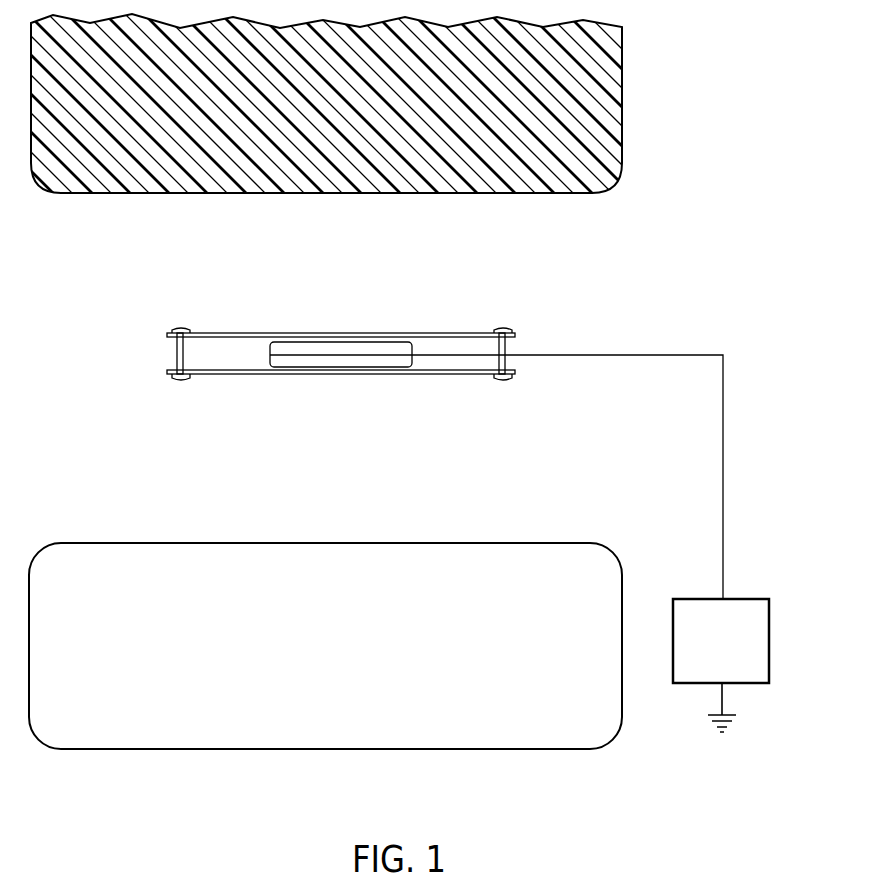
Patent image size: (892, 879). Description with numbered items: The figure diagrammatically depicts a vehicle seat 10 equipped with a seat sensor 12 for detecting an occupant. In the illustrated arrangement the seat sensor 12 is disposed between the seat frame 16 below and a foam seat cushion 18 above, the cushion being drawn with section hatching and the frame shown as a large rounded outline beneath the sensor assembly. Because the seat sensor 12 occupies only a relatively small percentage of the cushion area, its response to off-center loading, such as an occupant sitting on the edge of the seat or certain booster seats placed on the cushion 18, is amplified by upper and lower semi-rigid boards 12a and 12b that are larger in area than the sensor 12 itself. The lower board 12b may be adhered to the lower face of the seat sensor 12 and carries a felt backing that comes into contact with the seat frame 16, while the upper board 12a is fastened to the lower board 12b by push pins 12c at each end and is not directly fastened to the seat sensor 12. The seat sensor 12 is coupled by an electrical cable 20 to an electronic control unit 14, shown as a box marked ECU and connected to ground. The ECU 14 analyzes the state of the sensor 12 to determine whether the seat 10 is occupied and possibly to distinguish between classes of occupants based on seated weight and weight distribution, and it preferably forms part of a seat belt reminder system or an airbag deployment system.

The vehicle seat 10 is at (704, 200).
The seat sensor 12 is at (339, 357).
The upper semi-rigid board 12a is at (236, 333).
The lower semi-rigid board 12b is at (438, 376).
The push pins 12c is at (531, 338).
The electronic control unit (ECU) 14 is at (769, 623).
The seat frame 16 is at (98, 542).
The foam seat cushion 18 is at (622, 97).
The electrical cable 20 is at (637, 354).